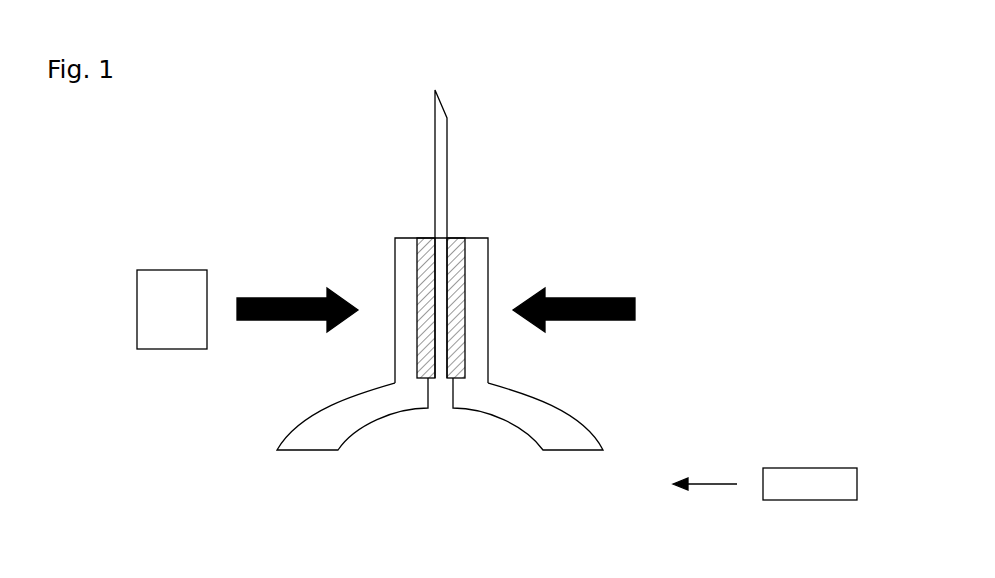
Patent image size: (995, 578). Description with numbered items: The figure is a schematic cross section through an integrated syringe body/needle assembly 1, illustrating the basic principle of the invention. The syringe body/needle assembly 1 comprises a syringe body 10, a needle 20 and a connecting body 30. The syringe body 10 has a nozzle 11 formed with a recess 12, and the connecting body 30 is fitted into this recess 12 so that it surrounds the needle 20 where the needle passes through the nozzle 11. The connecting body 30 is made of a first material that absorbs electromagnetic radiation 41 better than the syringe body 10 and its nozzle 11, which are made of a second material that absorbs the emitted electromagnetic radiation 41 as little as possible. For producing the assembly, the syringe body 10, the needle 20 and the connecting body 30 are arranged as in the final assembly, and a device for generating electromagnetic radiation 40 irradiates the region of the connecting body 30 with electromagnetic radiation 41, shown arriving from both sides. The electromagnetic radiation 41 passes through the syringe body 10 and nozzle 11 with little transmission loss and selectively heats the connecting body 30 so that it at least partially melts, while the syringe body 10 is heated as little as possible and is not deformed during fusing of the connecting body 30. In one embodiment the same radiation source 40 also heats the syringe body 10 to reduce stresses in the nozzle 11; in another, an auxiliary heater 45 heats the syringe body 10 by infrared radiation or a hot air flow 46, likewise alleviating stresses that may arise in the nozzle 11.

The syringe body/needle assembly 1 is at (602, 98).
The syringe body 10 is at (330, 430).
The nozzle 11 is at (478, 262).
The recess 12 is at (463, 353).
The needle 20 is at (440, 160).
The connecting body 30 is at (427, 262).
The device for generating electromagnetic radiation 40 is at (162, 283).
The electromagnetic radiation 41 is at (279, 298).
The auxiliary heater 45 is at (812, 478).
The infrared radiation or hot air flow 46 is at (715, 492).